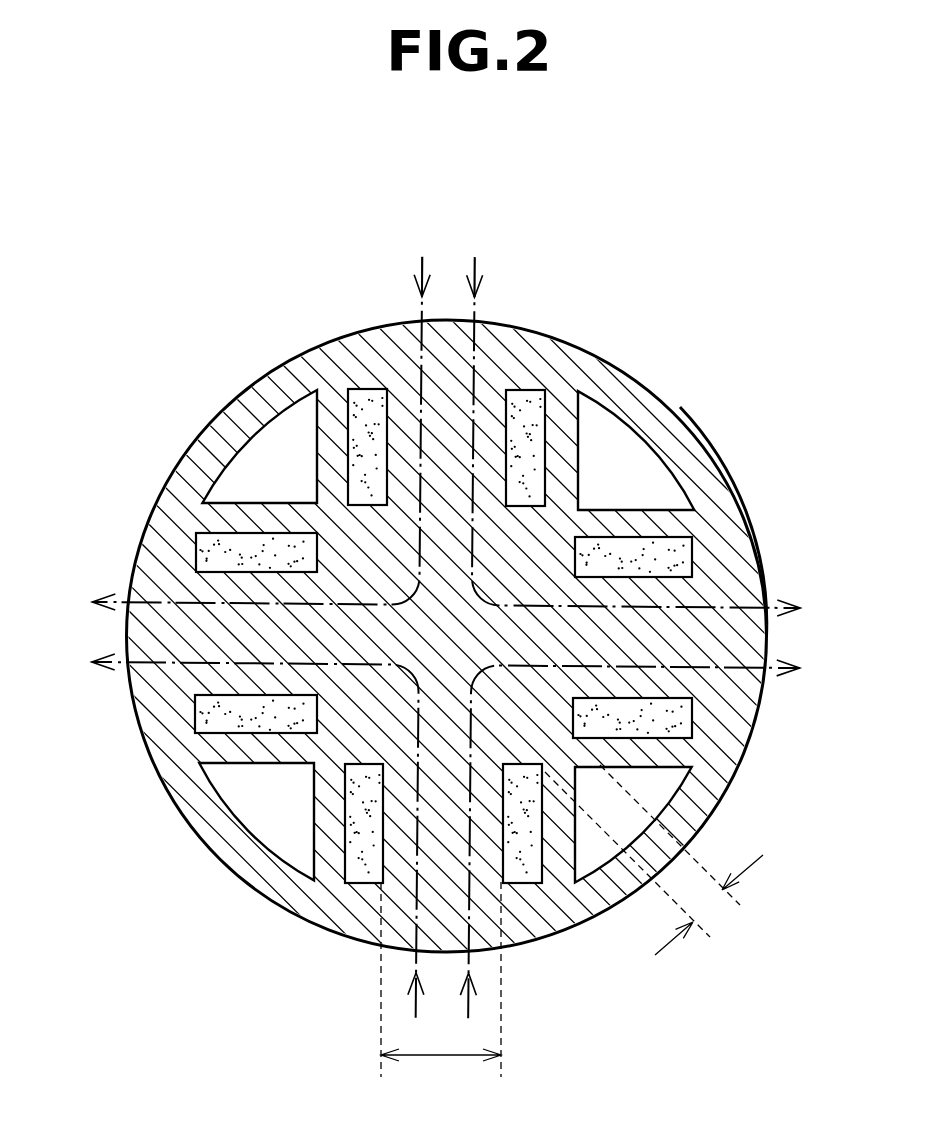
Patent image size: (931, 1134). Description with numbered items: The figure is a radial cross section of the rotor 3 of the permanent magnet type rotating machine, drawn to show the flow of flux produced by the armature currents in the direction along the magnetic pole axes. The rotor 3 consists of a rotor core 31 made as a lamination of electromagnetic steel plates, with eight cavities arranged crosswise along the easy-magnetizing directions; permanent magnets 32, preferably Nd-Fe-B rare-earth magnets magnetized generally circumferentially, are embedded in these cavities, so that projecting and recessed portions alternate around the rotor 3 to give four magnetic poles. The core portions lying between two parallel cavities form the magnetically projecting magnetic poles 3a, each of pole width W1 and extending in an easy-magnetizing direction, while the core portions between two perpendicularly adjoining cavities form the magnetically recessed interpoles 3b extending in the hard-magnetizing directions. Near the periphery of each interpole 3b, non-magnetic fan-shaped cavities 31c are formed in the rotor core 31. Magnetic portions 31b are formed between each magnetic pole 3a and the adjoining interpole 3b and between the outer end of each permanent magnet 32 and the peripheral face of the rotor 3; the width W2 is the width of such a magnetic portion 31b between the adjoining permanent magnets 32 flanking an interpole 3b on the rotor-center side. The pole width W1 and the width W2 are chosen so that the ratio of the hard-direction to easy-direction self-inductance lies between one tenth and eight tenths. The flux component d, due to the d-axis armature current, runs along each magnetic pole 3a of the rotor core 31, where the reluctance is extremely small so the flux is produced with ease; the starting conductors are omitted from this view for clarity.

The rotor 3 is at (238, 375).
The rotor core 31 is at (357, 337).
The magnetic portions 31b is at (557, 358).
The fan-shaped cavities 31c is at (212, 420).
The permanent magnets 32 is at (357, 388).
The magnetic poles 3a is at (457, 342).
The interpoles 3b is at (687, 452).
The pole width W1 is at (441, 979).
The width W2 is at (707, 905).
The magnetic flux d is at (423, 257).